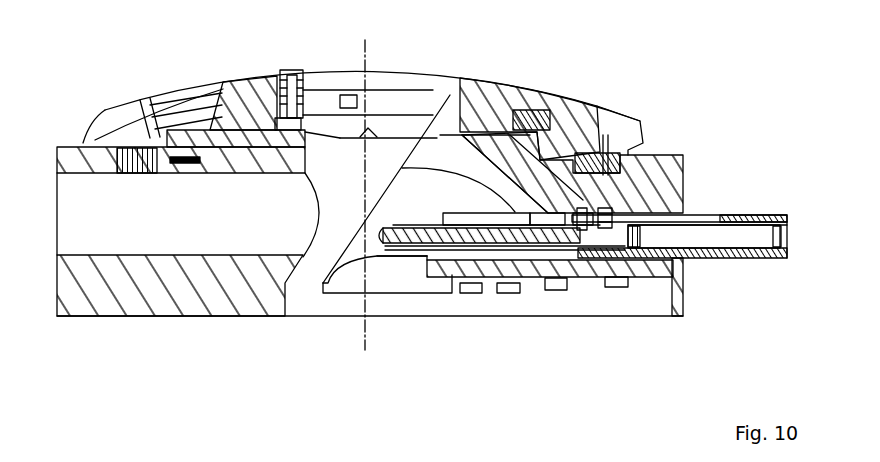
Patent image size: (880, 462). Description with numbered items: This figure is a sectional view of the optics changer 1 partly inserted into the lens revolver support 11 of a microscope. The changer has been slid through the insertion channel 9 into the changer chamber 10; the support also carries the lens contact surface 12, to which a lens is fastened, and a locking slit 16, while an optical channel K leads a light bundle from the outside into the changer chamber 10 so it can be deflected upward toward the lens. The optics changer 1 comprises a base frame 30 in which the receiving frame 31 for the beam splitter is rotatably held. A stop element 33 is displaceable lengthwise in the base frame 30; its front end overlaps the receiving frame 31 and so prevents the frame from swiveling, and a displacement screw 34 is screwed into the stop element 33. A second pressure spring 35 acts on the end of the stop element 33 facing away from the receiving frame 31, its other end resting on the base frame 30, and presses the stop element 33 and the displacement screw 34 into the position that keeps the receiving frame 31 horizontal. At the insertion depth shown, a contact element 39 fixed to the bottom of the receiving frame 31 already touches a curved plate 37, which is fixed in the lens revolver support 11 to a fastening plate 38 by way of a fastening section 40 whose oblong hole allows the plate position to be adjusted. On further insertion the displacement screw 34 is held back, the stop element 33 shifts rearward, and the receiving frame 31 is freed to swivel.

The optics changer 1 is at (752, 213).
The insertion channel 9 is at (589, 258).
The changer chamber 10 is at (390, 197).
The lens revolver support 11 is at (540, 85).
The lens contact surface 12 is at (297, 68).
The locking slit 16 is at (645, 297).
The base frame 30 is at (710, 258).
The receiving frame 31 is at (463, 243).
The stop element 33 is at (613, 240).
The displacement screw 34 is at (620, 210).
The second pressure spring 35 is at (768, 237).
The curved plate 37 is at (333, 297).
The fastening plate 38 is at (532, 293).
The contact element 39 is at (403, 258).
The fastening section 40 is at (490, 278).
The optical channel K is at (203, 240).